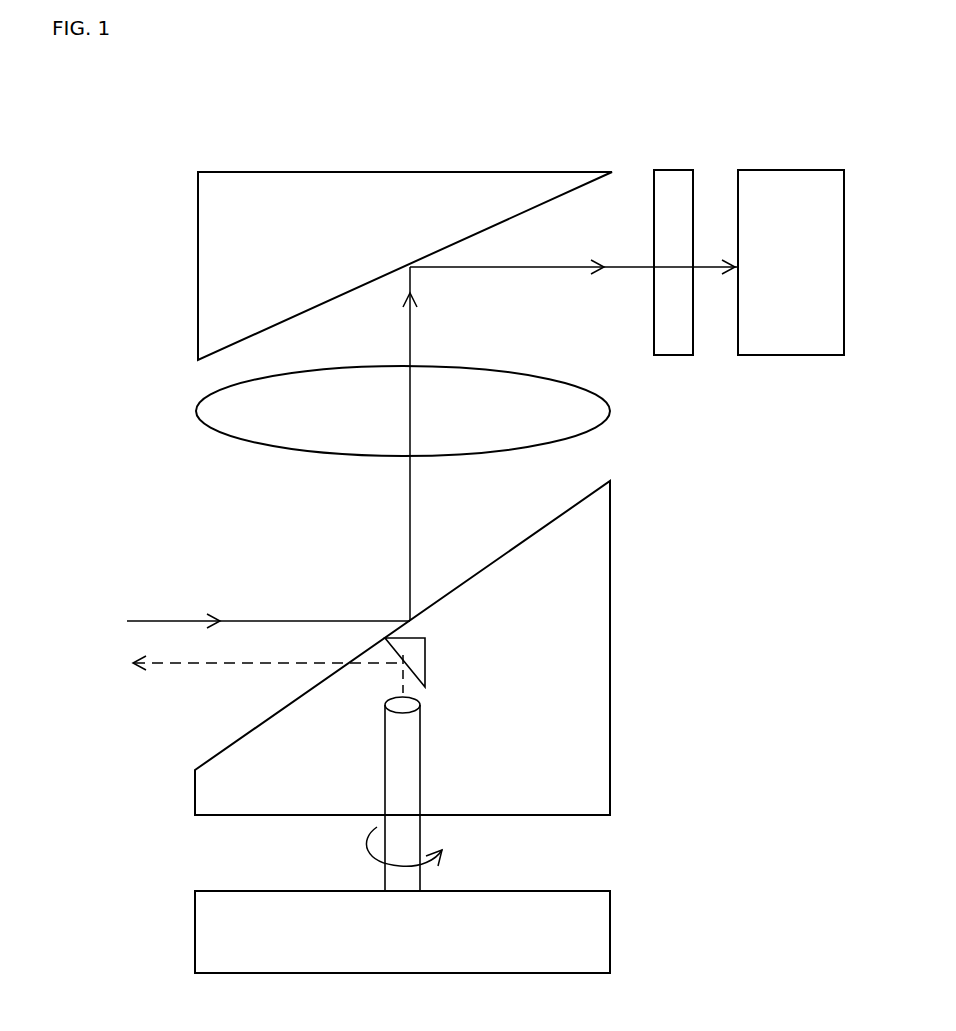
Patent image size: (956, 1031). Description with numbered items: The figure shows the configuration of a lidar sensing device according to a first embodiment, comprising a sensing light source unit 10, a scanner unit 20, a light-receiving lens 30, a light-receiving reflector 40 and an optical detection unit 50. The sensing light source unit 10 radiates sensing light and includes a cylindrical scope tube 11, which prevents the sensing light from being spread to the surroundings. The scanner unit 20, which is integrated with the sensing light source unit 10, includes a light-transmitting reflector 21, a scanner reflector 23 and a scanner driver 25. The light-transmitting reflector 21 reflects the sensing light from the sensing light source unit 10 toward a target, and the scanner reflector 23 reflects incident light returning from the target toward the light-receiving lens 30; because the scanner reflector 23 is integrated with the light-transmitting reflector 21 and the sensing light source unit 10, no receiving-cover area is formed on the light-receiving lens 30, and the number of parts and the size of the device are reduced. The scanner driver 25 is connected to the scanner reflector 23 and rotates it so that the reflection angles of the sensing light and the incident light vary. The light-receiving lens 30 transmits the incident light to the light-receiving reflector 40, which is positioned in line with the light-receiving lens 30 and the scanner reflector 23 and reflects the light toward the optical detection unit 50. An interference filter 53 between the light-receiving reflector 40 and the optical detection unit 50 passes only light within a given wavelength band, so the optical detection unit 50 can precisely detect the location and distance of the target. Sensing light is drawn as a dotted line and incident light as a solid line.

The sensing light source unit 10 is at (372, 785).
The scope tube 11 is at (422, 759).
The scanner unit 20 is at (642, 652).
The light-transmitting reflector 21 is at (425, 655).
The scanner reflector 23 is at (610, 790).
The scanner driver 25 is at (610, 923).
The light-receiving lens 30 is at (215, 390).
The light-receiving reflector 40 is at (508, 170).
The optical detection unit 50 is at (800, 170).
The interference filter 53 is at (673, 170).